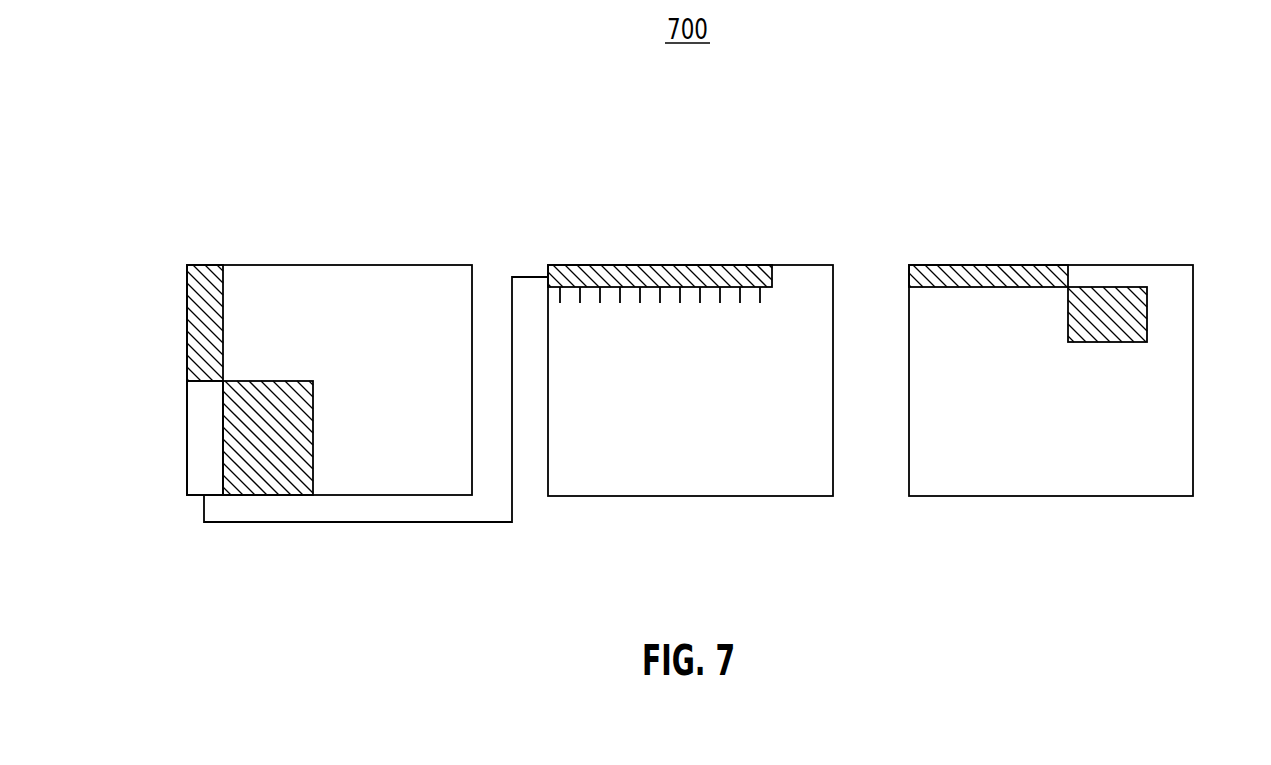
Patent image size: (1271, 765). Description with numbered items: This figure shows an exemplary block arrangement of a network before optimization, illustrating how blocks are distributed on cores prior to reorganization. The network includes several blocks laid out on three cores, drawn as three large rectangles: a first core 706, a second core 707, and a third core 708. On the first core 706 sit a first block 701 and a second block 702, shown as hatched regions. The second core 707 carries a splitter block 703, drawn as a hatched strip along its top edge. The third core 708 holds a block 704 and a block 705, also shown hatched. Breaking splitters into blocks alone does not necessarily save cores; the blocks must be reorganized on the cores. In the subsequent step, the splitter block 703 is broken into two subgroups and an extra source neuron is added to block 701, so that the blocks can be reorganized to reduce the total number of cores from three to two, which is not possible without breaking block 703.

The block 701 is at (203, 287).
The block 702 is at (267, 463).
The splitter block 703 is at (649, 272).
The block 704 is at (972, 278).
The block 705 is at (1107, 313).
The core 706 is at (402, 263).
The core 707 is at (800, 263).
The core 708 is at (1168, 263).